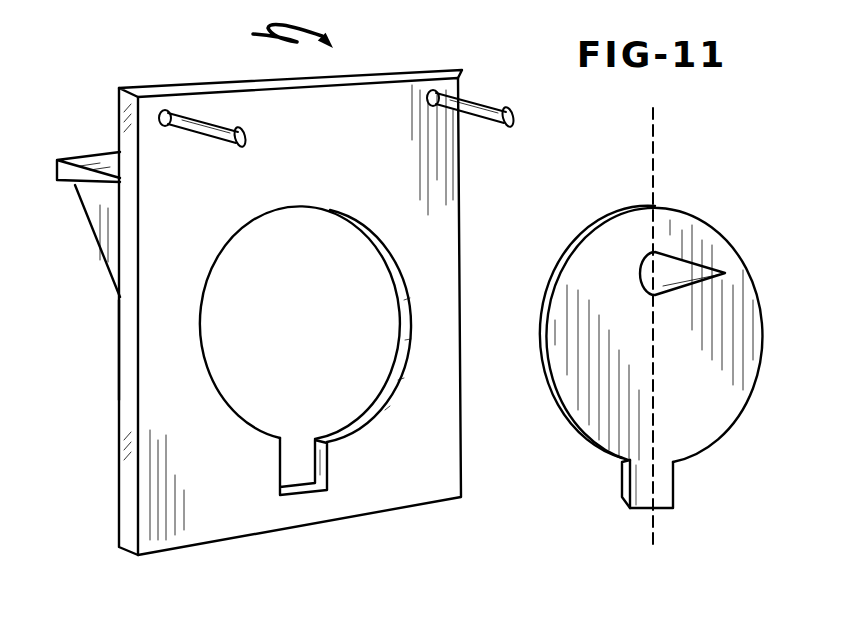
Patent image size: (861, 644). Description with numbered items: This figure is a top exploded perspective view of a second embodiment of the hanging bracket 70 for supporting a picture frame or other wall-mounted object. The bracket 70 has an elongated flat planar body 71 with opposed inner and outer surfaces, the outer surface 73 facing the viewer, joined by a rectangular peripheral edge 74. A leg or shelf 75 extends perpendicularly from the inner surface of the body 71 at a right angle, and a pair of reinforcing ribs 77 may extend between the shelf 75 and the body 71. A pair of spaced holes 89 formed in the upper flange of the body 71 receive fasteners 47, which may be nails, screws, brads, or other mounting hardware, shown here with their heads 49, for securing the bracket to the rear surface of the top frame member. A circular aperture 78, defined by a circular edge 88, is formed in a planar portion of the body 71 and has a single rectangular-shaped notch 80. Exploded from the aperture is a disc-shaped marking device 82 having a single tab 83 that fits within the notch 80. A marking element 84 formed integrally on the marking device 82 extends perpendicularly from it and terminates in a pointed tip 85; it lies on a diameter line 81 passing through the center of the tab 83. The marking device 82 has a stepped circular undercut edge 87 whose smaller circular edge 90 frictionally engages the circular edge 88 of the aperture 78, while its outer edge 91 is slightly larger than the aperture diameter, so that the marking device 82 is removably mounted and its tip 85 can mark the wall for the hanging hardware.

The bracket 70 is at (253, 34).
The body 71 is at (247, 556).
The outer surface 73 is at (440, 412).
The peripheral edge 74 is at (127, 336).
The shelf 75 is at (108, 157).
The reinforcing ribs 77 is at (107, 270).
The circular aperture 78 is at (397, 322).
The notch 80 is at (322, 466).
The circular edge 88 is at (397, 280).
The holes 89 is at (165, 112).
The fasteners 47 is at (205, 124).
The screw heads 49 is at (236, 142).
The diameter line 81 is at (652, 177).
The marking device 82 is at (775, 406).
The tab 83 is at (668, 496).
The marking element 84 is at (685, 262).
The tip 85 is at (728, 273).
The stepped circular undercut edge 87 is at (605, 469).
The smaller circular edge 90 is at (625, 489).
The outer edge 91 is at (558, 270).